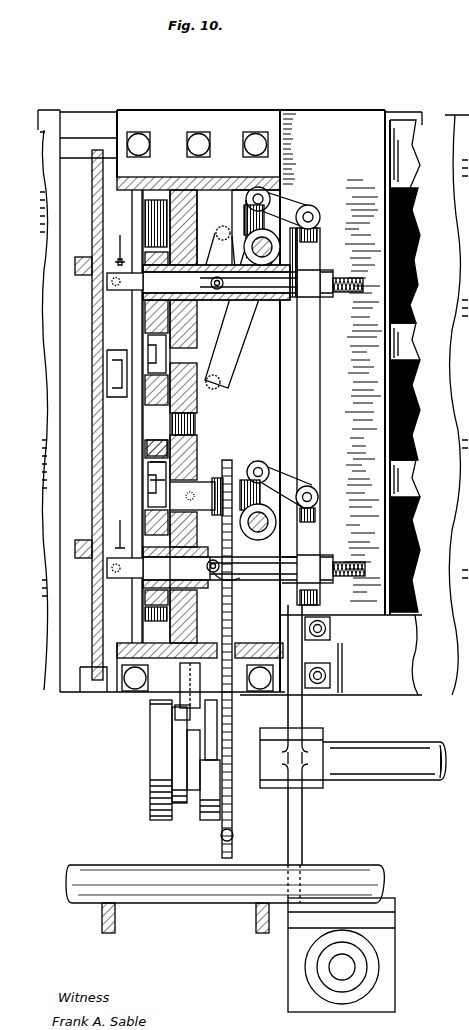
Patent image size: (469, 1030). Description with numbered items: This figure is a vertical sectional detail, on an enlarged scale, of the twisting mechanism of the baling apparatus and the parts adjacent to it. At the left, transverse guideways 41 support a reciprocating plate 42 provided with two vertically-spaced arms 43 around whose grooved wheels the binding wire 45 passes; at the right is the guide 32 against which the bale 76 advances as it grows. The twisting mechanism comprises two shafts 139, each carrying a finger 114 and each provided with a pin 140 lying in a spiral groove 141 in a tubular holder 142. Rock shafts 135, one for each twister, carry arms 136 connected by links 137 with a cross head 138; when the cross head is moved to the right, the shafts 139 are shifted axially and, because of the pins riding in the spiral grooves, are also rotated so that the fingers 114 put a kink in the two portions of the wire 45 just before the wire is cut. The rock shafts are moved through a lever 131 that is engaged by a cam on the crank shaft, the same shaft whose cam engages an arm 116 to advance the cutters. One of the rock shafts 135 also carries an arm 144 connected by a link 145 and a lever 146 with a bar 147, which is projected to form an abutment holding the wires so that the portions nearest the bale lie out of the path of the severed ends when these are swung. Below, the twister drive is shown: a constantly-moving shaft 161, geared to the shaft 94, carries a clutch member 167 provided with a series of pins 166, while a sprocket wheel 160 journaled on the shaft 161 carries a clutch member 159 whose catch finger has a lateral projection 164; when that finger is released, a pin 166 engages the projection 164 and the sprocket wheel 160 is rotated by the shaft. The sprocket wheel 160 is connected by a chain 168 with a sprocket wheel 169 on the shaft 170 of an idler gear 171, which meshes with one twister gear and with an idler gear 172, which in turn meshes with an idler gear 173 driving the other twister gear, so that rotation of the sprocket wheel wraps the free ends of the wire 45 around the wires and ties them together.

The transverse guideways 41 is at (80, 130).
The reciprocating plate 42 is at (98, 468).
The arms 43 is at (84, 276).
The binding wire 45 is at (430, 572).
The guide 32 is at (414, 352).
The bale 76 is at (418, 232).
The shaft 94 is at (220, 903).
The finger 114 is at (125, 290).
The arm 116 is at (110, 934).
The lever 131 is at (262, 934).
The rock shafts 135 is at (262, 268).
The arms 136 is at (262, 248).
The links 137 is at (298, 207).
The cross head 138 is at (312, 340).
The shafts 139 is at (238, 296).
The pin 140 is at (240, 300).
The spiral groove 141 is at (219, 578).
The tubular holder 142 is at (292, 262).
The arm 144 is at (190, 185).
The link 145 is at (232, 325).
The lever 146 is at (193, 350).
The bar 147 is at (156, 620).
The clutch member 159 is at (210, 820).
The sprocket wheel 160 is at (232, 835).
The constantly-moving shaft 161 is at (425, 770).
The lateral projection 164 is at (183, 680).
The pins 166 is at (180, 805).
The clutch member 167 is at (152, 820).
The chain 168 is at (236, 730).
The sprocket wheel 169 is at (224, 485).
The shaft 170 is at (208, 482).
The idler gear 171 is at (150, 470).
The idler gear 172 is at (147, 446).
The idler gear 173 is at (128, 392).